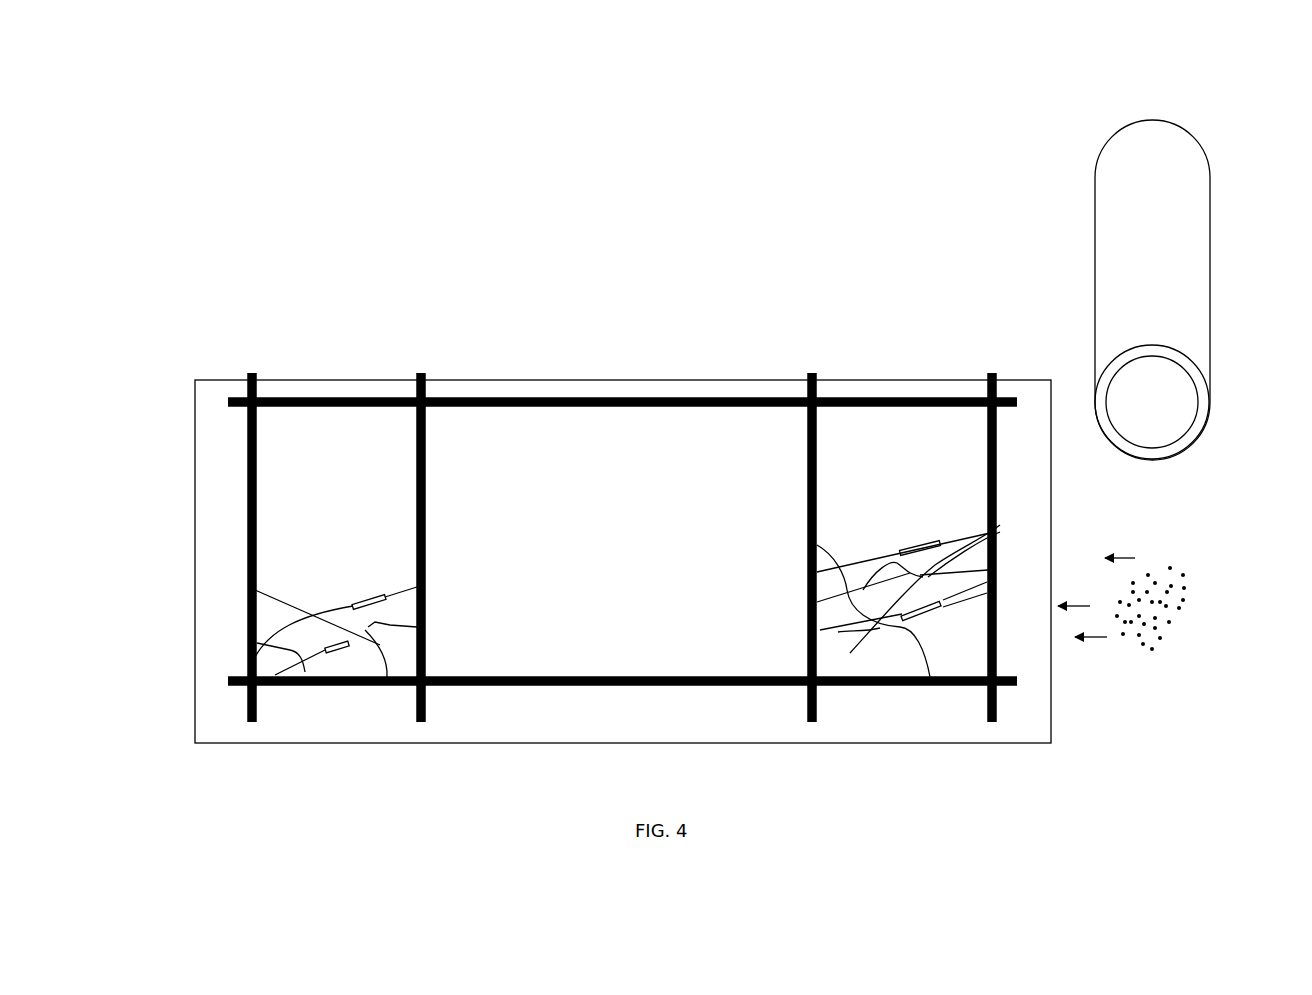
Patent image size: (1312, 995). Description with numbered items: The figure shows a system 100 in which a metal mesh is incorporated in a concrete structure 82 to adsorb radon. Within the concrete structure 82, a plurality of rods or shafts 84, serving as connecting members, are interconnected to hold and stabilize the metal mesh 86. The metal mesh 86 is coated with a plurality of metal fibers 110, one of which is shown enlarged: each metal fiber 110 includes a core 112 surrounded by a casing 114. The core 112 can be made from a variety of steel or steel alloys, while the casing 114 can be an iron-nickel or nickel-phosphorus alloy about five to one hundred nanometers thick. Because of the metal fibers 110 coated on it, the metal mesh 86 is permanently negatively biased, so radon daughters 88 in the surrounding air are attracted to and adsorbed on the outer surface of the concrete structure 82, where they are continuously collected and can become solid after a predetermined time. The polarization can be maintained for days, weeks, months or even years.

The concrete structure 82 is at (1052, 495).
The rods or shafts 84 is at (247, 495).
The metal mesh 86 is at (285, 622).
The radon daughters 88 is at (1155, 652).
The system 100 is at (484, 264).
The metal fibers 110 is at (723, 440).
The core 112 is at (1141, 407).
The casing 114 is at (1120, 218).